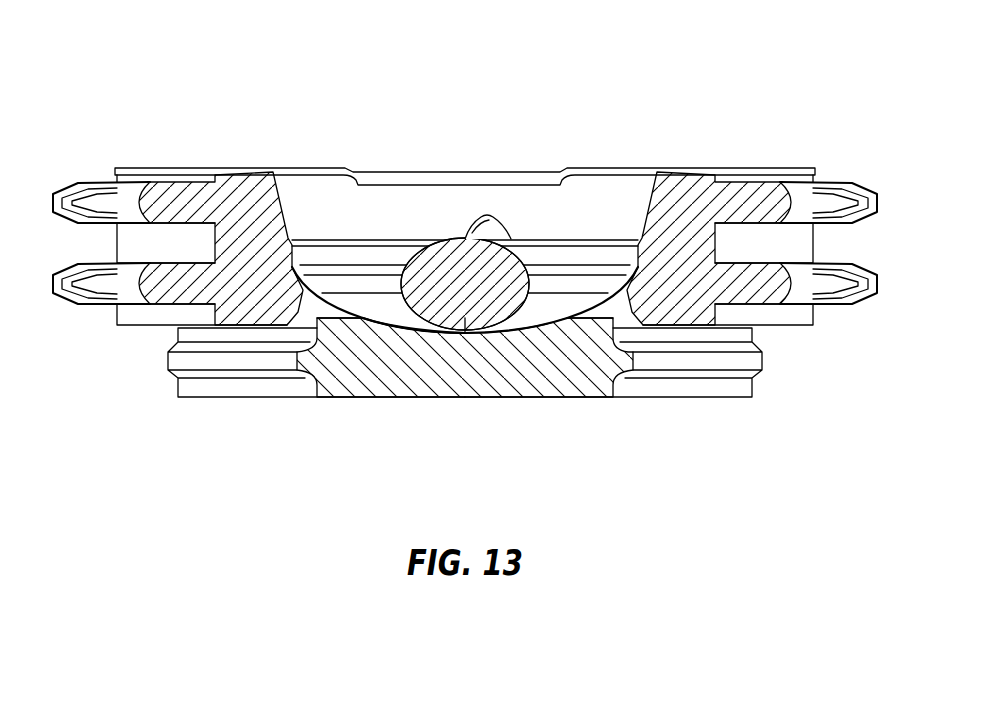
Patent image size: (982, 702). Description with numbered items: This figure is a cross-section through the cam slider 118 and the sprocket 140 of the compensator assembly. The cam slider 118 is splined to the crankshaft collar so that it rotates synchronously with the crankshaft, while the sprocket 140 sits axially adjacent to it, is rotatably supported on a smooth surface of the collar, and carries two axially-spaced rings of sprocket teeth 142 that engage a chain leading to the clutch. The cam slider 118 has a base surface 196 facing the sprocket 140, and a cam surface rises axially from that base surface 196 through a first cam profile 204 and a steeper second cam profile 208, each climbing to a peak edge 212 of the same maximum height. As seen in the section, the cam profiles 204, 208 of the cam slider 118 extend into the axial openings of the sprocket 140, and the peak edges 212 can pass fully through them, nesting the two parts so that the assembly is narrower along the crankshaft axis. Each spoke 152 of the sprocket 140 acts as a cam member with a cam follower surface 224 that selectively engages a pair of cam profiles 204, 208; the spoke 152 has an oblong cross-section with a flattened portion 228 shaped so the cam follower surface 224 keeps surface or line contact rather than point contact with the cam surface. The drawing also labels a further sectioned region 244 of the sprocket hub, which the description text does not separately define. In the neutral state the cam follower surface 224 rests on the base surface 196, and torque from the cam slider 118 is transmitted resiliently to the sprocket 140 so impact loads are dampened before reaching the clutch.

The cam slider 118 is at (540, 386).
The sprocket 140 is at (692, 217).
The sprocket teeth 142 is at (793, 285).
The spoke 152 is at (427, 257).
The base surface 196 is at (465, 333).
The first cam profile 204 is at (323, 295).
The second cam profile 208 is at (625, 275).
The peak edge 212 is at (487, 216).
The cam follower surface 224 is at (390, 318).
The flattened portion 228 is at (450, 328).
The rotor 244 is at (241, 238).